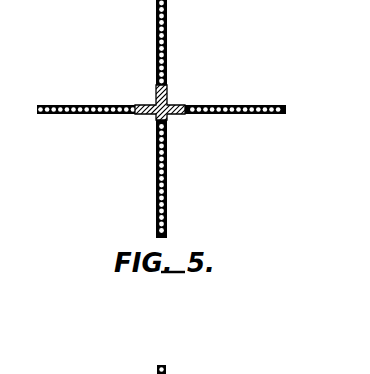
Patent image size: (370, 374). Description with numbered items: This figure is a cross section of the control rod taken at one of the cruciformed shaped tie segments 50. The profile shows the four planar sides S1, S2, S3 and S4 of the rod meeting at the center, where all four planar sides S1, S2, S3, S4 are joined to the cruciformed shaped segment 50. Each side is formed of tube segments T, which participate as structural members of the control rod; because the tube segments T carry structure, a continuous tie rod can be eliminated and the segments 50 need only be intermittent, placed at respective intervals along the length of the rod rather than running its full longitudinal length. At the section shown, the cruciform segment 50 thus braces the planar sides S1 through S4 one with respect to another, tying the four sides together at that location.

The planar side S1 is at (72, 104).
The planar side S2 is at (168, 206).
The planar side S3 is at (169, 42).
The planar side S4 is at (233, 104).
The tube segment T is at (161, 119).
The cruciformed shaped tie segment 50 is at (168, 118).